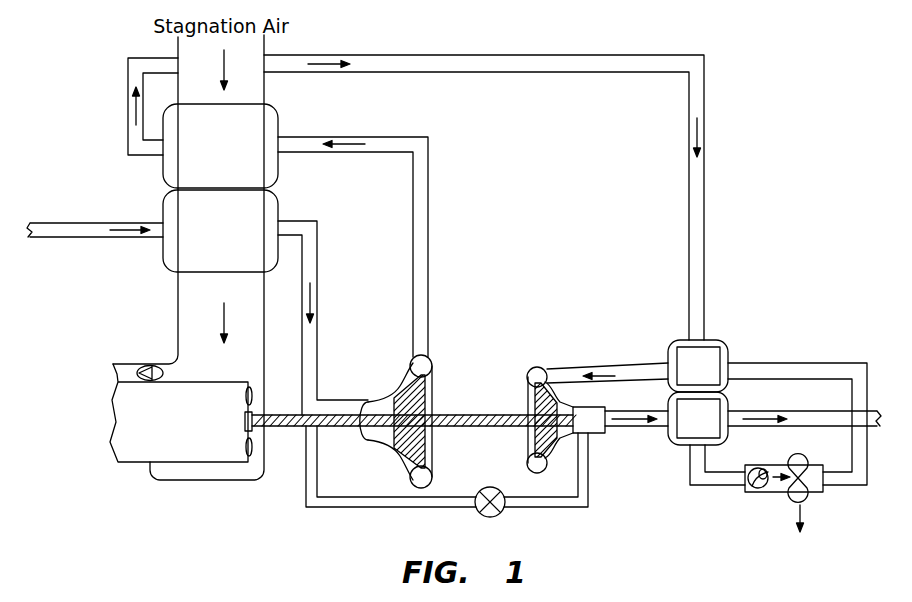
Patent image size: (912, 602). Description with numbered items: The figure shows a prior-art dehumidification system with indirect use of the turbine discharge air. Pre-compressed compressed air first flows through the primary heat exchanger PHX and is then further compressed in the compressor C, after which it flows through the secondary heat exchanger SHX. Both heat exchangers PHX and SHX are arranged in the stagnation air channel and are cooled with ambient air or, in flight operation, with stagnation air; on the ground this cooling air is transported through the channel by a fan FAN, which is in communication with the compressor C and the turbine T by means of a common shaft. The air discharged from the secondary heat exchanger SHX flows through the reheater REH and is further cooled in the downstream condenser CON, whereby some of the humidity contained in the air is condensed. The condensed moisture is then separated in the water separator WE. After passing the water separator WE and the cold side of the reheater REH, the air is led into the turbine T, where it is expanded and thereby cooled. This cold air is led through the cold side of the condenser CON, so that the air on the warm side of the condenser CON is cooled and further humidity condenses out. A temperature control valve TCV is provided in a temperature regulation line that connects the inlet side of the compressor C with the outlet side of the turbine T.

The secondary heat exchanger SHX is at (278, 207).
The primary heat exchanger PHX is at (197, 302).
The fan FAN is at (181, 413).
The compressor C is at (408, 421).
The turbine T is at (584, 418).
The temperature control valve TCV is at (490, 488).
The reheater REH is at (767, 412).
The condenser CON is at (706, 438).
The water separator WE is at (782, 483).